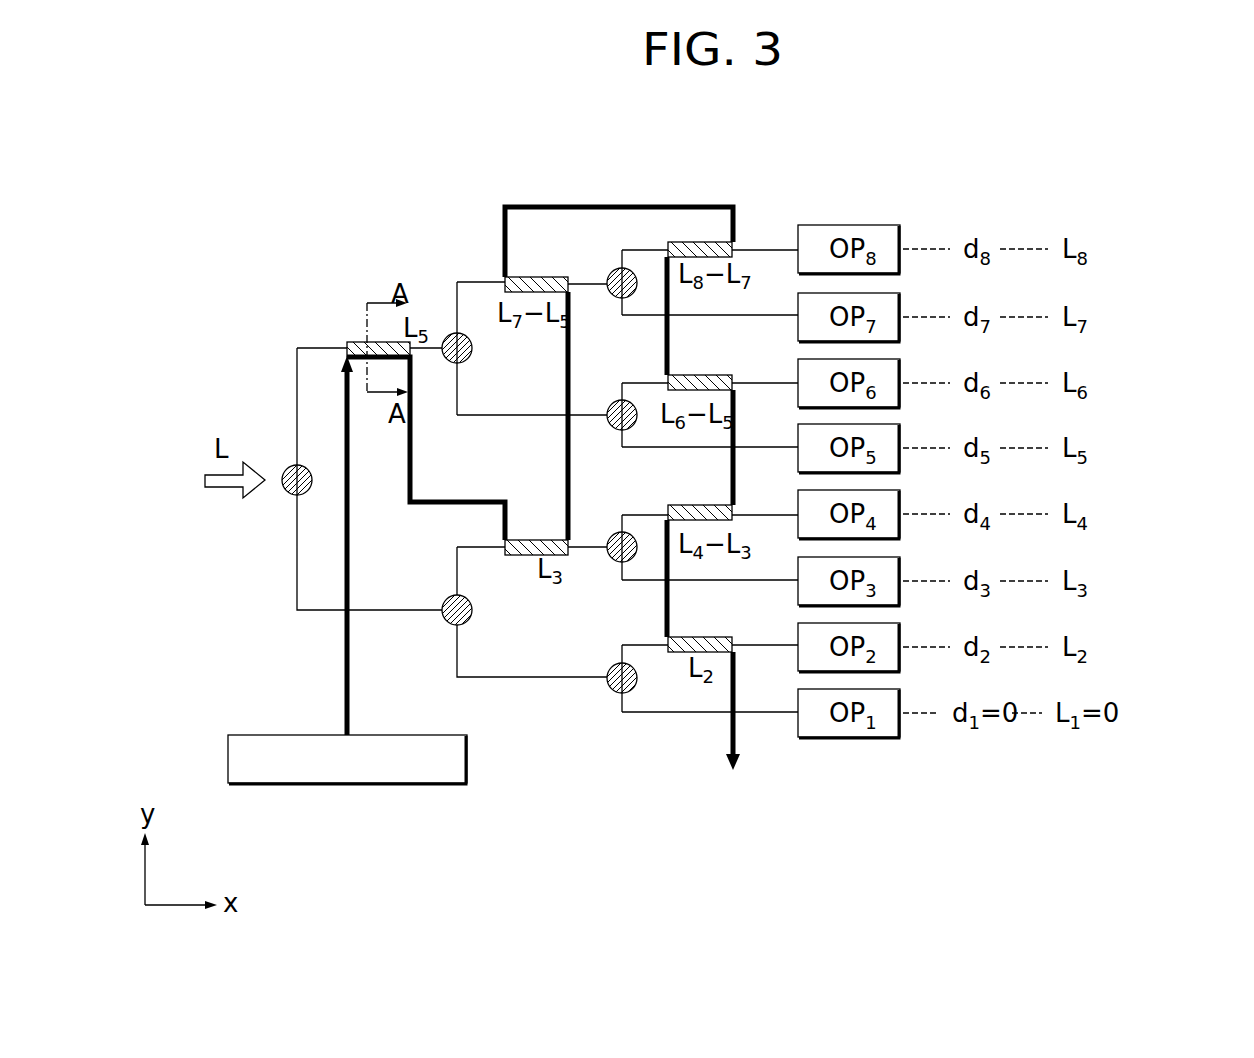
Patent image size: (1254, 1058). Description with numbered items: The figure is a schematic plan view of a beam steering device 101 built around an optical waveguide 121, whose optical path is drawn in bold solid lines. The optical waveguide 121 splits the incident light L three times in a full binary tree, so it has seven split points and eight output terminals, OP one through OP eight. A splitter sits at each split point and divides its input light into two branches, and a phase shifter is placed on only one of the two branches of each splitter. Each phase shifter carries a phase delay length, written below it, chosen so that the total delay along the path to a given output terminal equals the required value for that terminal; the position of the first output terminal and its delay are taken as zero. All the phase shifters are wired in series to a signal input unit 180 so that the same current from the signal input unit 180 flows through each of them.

The beam steering device 101 is at (1120, 198).
The optical waveguide 121 is at (474, 272).
The signal input unit 180 is at (370, 735).